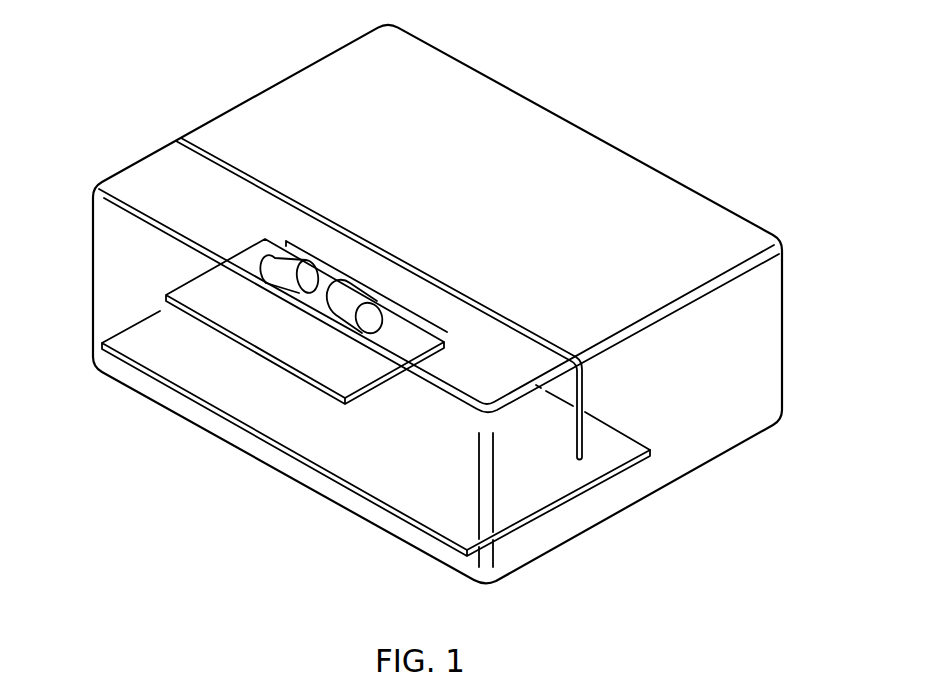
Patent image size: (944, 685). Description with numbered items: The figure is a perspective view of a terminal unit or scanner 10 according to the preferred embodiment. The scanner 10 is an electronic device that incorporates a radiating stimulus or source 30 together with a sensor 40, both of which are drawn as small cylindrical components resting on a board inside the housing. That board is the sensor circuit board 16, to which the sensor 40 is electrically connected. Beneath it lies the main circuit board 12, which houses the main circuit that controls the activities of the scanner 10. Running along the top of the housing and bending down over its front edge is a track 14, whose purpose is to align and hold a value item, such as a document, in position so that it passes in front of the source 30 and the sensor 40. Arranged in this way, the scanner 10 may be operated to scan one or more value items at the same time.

The scanner 10 is at (603, 142).
The main circuit board 12 is at (547, 503).
The track 14 is at (224, 161).
The sensor circuit board 16 is at (238, 255).
The radiating source 30 is at (276, 278).
The sensor 40 is at (364, 302).